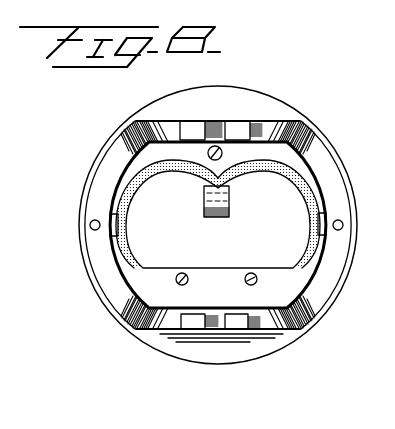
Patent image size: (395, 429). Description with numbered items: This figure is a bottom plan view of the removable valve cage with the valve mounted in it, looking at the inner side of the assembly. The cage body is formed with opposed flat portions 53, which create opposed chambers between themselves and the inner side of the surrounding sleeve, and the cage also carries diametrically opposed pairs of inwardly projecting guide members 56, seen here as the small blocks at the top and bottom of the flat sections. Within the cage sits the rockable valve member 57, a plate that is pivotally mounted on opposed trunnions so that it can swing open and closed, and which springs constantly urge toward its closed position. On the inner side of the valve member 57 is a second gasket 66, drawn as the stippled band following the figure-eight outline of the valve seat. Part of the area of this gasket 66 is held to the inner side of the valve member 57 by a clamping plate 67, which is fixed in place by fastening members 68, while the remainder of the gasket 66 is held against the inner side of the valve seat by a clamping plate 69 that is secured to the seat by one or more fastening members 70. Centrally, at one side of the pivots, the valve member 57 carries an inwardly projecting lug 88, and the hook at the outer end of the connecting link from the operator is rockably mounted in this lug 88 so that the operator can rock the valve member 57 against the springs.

The flat portions 53 is at (278, 333).
The guide members 56 is at (234, 133).
The valve member 57 is at (218, 219).
The second gasket 66 is at (300, 184).
The clamping plate 67 is at (236, 282).
The fastening members 68 is at (182, 273).
The clamping plate 69 is at (289, 167).
The fastening members 70 is at (216, 147).
The lug 88 is at (203, 199).